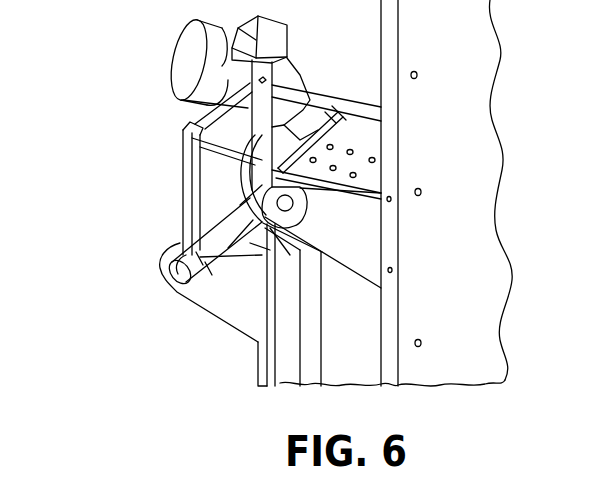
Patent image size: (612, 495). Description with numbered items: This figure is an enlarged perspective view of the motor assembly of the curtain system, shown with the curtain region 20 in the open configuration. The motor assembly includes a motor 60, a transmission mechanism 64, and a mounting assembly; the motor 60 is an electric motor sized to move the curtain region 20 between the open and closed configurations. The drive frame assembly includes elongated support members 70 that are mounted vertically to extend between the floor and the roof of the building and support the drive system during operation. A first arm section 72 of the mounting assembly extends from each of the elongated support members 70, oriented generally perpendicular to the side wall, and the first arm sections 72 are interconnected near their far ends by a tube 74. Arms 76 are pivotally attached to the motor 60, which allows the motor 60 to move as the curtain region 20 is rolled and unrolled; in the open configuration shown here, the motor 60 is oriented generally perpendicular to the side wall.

The curtain region 20 is at (112, 37).
The motor 60 is at (180, 102).
The transmission mechanism 64 is at (340, 115).
The elongated support members 70 is at (262, 372).
The first arm section 72 is at (207, 302).
The tube 74 is at (200, 246).
The arms 76 is at (255, 160).